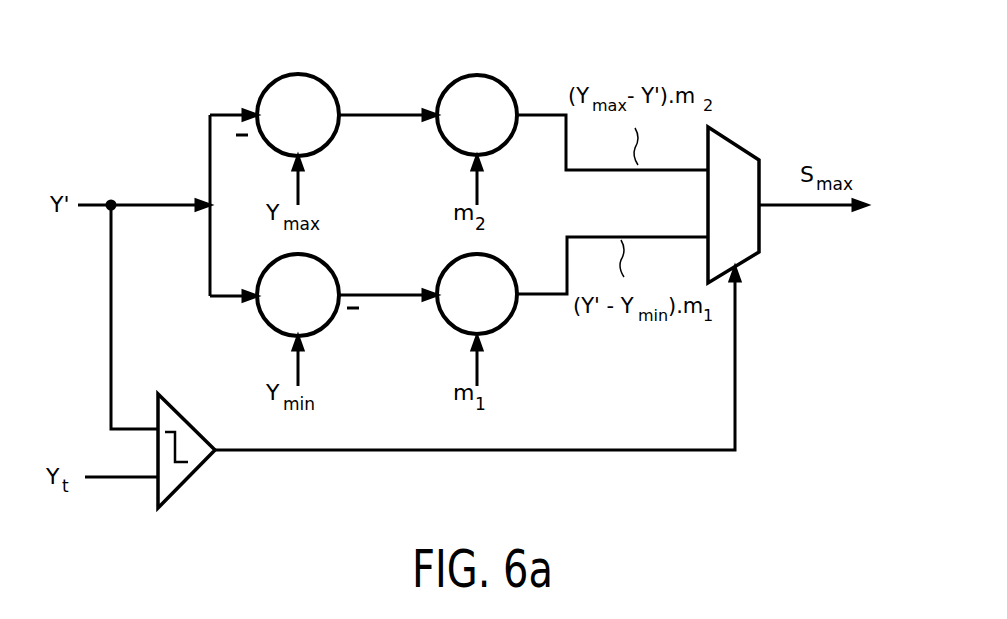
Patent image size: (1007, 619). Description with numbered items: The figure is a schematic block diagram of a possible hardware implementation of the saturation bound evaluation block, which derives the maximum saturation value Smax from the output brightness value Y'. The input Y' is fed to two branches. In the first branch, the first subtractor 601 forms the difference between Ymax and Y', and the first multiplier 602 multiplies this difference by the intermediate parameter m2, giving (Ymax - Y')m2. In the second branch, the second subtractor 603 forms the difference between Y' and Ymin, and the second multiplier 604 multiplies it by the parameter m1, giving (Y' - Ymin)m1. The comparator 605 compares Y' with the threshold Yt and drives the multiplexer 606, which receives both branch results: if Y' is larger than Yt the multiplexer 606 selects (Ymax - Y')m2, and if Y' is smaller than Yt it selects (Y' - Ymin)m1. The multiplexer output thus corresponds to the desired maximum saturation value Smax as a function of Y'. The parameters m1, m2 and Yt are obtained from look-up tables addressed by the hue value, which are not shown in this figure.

The first subtractor 601 is at (302, 76).
The first multiplier 602 is at (487, 76).
The second subtractor 603 is at (265, 320).
The second multiplier 604 is at (443, 320).
The comparator 605 is at (170, 478).
The multiplexer 606 is at (732, 153).